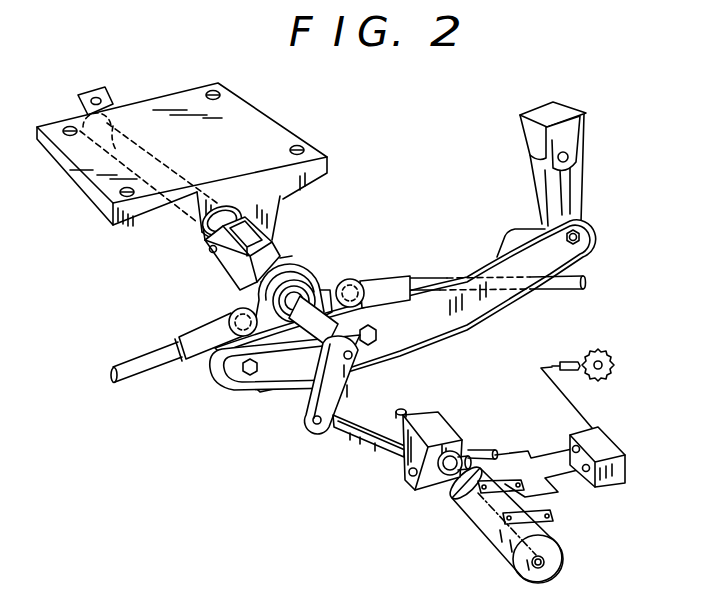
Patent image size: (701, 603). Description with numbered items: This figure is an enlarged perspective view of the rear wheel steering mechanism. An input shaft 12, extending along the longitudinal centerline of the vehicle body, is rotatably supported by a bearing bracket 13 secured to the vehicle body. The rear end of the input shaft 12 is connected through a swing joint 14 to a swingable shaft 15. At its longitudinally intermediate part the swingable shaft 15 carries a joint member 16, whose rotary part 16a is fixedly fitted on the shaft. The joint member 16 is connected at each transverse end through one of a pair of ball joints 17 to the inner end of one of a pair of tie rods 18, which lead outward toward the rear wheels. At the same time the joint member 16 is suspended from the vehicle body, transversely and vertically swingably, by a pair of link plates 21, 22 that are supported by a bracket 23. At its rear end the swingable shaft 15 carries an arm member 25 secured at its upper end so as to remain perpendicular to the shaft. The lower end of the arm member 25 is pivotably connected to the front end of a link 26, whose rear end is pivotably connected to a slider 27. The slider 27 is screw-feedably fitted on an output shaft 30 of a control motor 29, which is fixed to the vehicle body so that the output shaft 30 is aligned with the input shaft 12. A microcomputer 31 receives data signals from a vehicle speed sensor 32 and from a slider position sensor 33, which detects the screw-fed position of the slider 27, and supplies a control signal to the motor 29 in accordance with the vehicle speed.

The input shaft 12 is at (139, 141).
The bearing bracket 13 is at (292, 133).
The swing joint 14 is at (280, 241).
The swingable shaft 15 is at (322, 356).
The joint member 16 is at (299, 277).
The rotary part 16a is at (302, 283).
The ball joints 17 is at (229, 315).
The tie rods 18 is at (143, 378).
The link plate 21 is at (492, 318).
The link plate 22 is at (580, 192).
The bracket 23 is at (586, 125).
The arm member 25 is at (358, 381).
The link 26 is at (361, 455).
The slider 27 is at (441, 428).
The control motor 29 is at (485, 543).
The output shaft 30 is at (458, 488).
The microcomputer 31 is at (612, 437).
The vehicle speed sensor 32 is at (570, 358).
The slider position sensor 33 is at (484, 449).